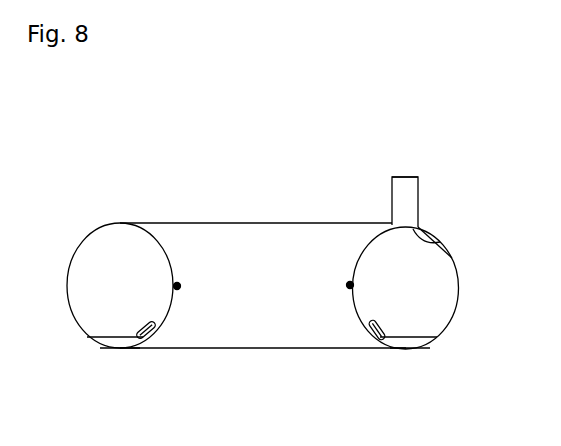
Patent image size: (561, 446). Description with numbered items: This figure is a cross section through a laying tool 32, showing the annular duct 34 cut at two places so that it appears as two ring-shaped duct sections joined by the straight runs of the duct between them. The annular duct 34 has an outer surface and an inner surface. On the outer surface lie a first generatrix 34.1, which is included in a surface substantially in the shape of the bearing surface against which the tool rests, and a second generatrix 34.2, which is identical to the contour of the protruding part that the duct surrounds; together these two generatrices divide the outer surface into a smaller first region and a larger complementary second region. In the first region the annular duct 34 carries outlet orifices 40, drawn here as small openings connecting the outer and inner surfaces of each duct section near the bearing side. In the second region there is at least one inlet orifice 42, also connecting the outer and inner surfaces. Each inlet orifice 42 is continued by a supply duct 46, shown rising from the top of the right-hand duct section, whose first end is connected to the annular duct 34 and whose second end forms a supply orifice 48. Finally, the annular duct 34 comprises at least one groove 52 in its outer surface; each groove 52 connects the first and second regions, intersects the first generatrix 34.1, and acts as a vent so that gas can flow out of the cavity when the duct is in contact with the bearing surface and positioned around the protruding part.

The laying tool 32 is at (186, 162).
The annular duct 34 is at (82, 214).
The first generatrix 34.1 is at (120, 350).
The second generatrix 34.2 is at (182, 286).
The outlet orifices 40 is at (155, 324).
The inlet orifice 42 is at (425, 241).
The supply duct 46 is at (407, 204).
The supply orifice 48 is at (426, 164).
The groove 52 is at (107, 348).